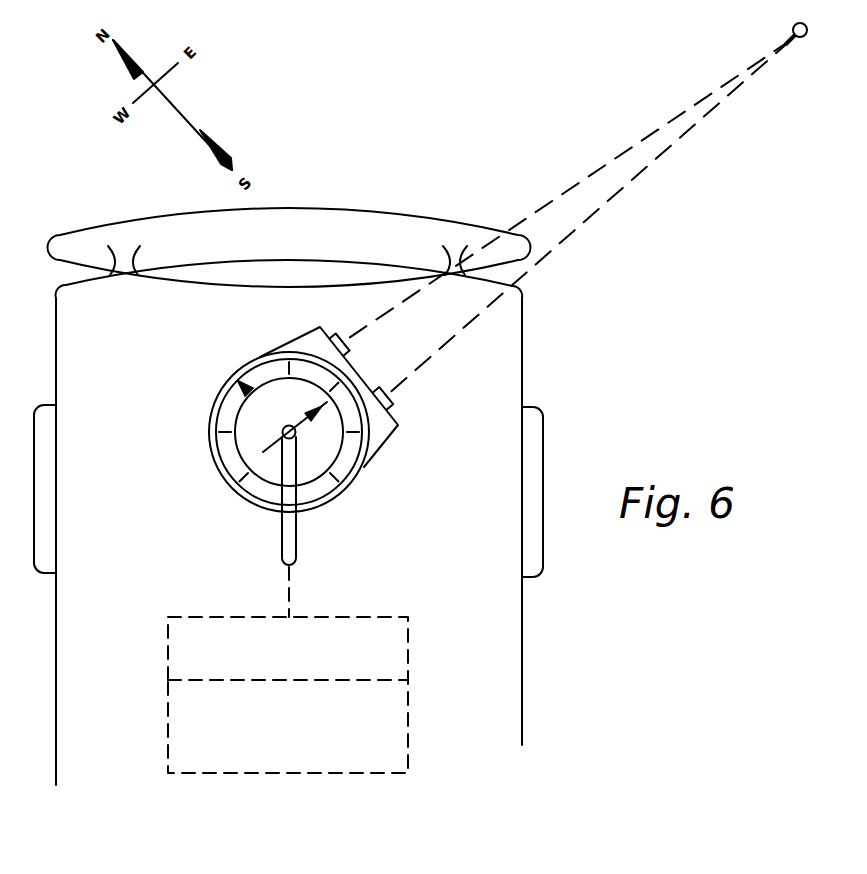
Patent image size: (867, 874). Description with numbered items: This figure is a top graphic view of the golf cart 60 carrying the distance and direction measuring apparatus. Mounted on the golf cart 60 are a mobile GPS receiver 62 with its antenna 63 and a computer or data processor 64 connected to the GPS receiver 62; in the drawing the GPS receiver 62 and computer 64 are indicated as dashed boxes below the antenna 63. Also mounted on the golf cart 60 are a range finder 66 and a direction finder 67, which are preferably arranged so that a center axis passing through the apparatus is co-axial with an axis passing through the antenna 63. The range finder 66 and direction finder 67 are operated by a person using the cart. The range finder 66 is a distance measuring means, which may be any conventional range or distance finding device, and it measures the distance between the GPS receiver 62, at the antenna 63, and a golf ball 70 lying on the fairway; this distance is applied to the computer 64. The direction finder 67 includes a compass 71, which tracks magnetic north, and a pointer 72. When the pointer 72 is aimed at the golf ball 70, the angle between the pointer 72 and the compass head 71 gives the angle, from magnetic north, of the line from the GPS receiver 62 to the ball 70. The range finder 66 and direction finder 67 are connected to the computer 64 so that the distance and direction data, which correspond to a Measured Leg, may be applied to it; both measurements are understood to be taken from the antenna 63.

The golf cart 60 is at (500, 358).
The mobile GPS receiver 62 is at (245, 664).
The antenna 63 is at (282, 545).
The computer 64 is at (298, 731).
The range finder 66 is at (322, 328).
The direction finder 67 is at (262, 358).
The golf ball 70 is at (798, 38).
The compass 71 is at (240, 383).
The pointer 72 is at (300, 426).